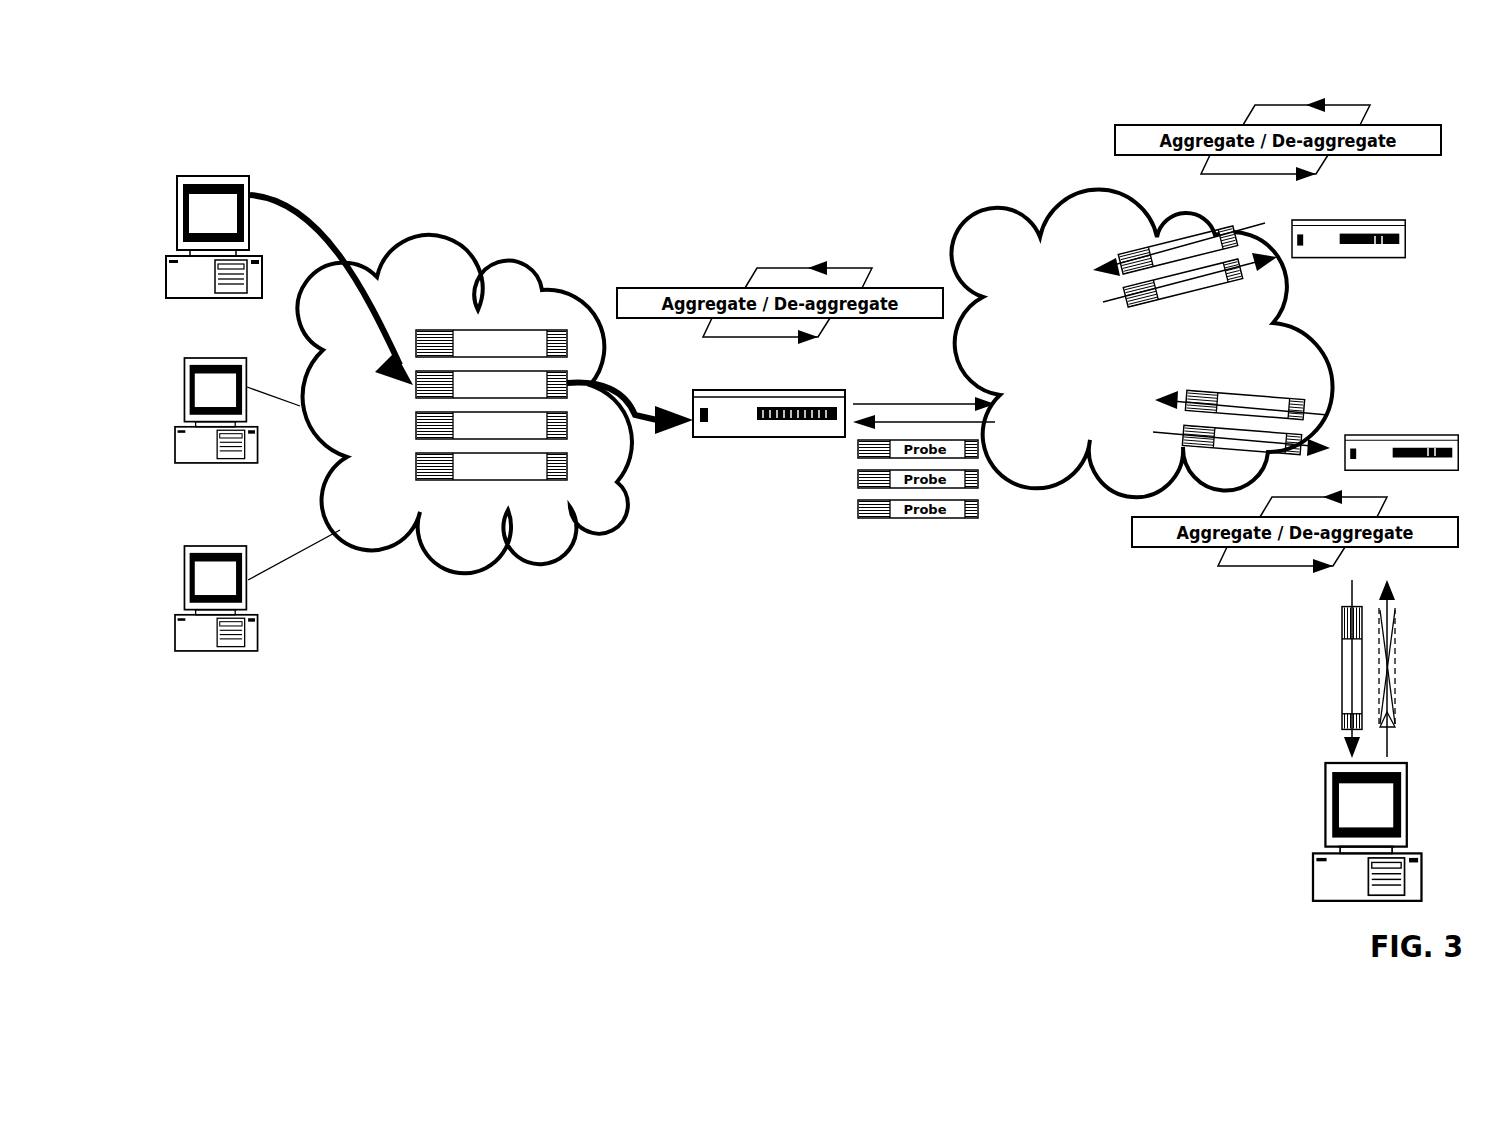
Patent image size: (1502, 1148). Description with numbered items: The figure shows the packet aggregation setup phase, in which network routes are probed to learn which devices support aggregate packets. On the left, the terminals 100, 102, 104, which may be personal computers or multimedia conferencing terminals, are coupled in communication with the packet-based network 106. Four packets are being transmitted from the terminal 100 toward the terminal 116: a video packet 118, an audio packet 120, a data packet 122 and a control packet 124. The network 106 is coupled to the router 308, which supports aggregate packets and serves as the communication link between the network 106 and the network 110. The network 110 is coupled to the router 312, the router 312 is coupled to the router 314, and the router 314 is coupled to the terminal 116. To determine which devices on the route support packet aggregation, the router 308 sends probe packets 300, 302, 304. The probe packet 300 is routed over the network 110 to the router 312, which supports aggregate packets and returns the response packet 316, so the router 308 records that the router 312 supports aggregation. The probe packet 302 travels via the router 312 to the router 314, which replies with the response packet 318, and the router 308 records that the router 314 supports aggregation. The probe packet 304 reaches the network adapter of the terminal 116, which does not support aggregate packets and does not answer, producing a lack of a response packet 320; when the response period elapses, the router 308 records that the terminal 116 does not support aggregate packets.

The terminal 100 is at (232, 176).
The terminal 102 is at (193, 360).
The terminal 104 is at (193, 548).
The network 106 is at (427, 233).
The network 110 is at (983, 190).
The terminal 116 is at (1340, 760).
The video packet 118 is at (493, 329).
The audio packet 120 is at (415, 393).
The data packet 122 is at (567, 414).
The control packet 124 is at (567, 467).
The probe packet 300 is at (980, 452).
The probe packet 302 is at (858, 476).
The probe packet 304 is at (858, 506).
The router 308 is at (747, 388).
The router 312 is at (1368, 218).
The router 314 is at (1402, 430).
The response packet 316 is at (1203, 228).
The response packet 318 is at (1212, 393).
The lack of a response packet 320 is at (1397, 637).